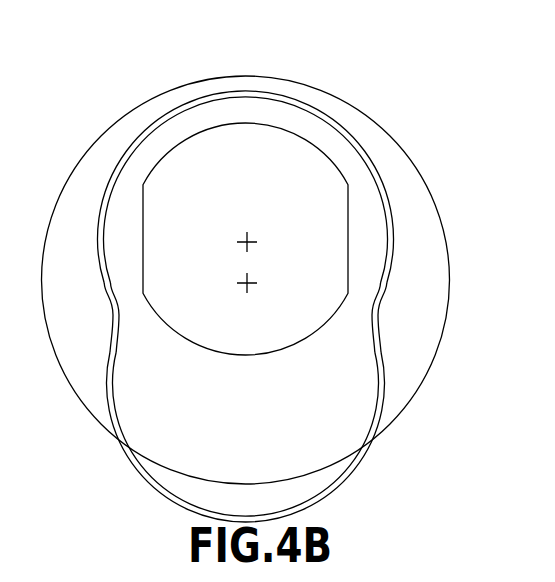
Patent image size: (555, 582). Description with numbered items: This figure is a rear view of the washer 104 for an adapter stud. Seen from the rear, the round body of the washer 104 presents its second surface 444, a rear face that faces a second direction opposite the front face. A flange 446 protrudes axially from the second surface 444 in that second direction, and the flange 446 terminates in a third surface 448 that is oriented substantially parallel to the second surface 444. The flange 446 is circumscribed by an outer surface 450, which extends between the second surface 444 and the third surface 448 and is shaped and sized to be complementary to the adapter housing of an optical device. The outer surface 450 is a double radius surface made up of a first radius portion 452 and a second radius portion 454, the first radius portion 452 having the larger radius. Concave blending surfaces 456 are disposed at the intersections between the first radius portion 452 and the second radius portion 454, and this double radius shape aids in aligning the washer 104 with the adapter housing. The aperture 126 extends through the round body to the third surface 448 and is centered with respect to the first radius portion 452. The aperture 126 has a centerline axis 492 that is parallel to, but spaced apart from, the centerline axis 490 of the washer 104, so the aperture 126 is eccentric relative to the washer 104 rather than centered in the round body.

The washer 104 is at (153, 70).
The aperture 126 is at (163, 330).
The second surface 444 is at (107, 143).
The flange 446 is at (248, 146).
The third surface 448 is at (343, 157).
The outer surface 450 is at (330, 115).
The first radius portion 452 is at (237, 92).
The second radius portion 454 is at (360, 395).
The blending surfaces 456 is at (108, 300).
The centerline axis 490 is at (248, 280).
The centerline axis 492 is at (248, 238).